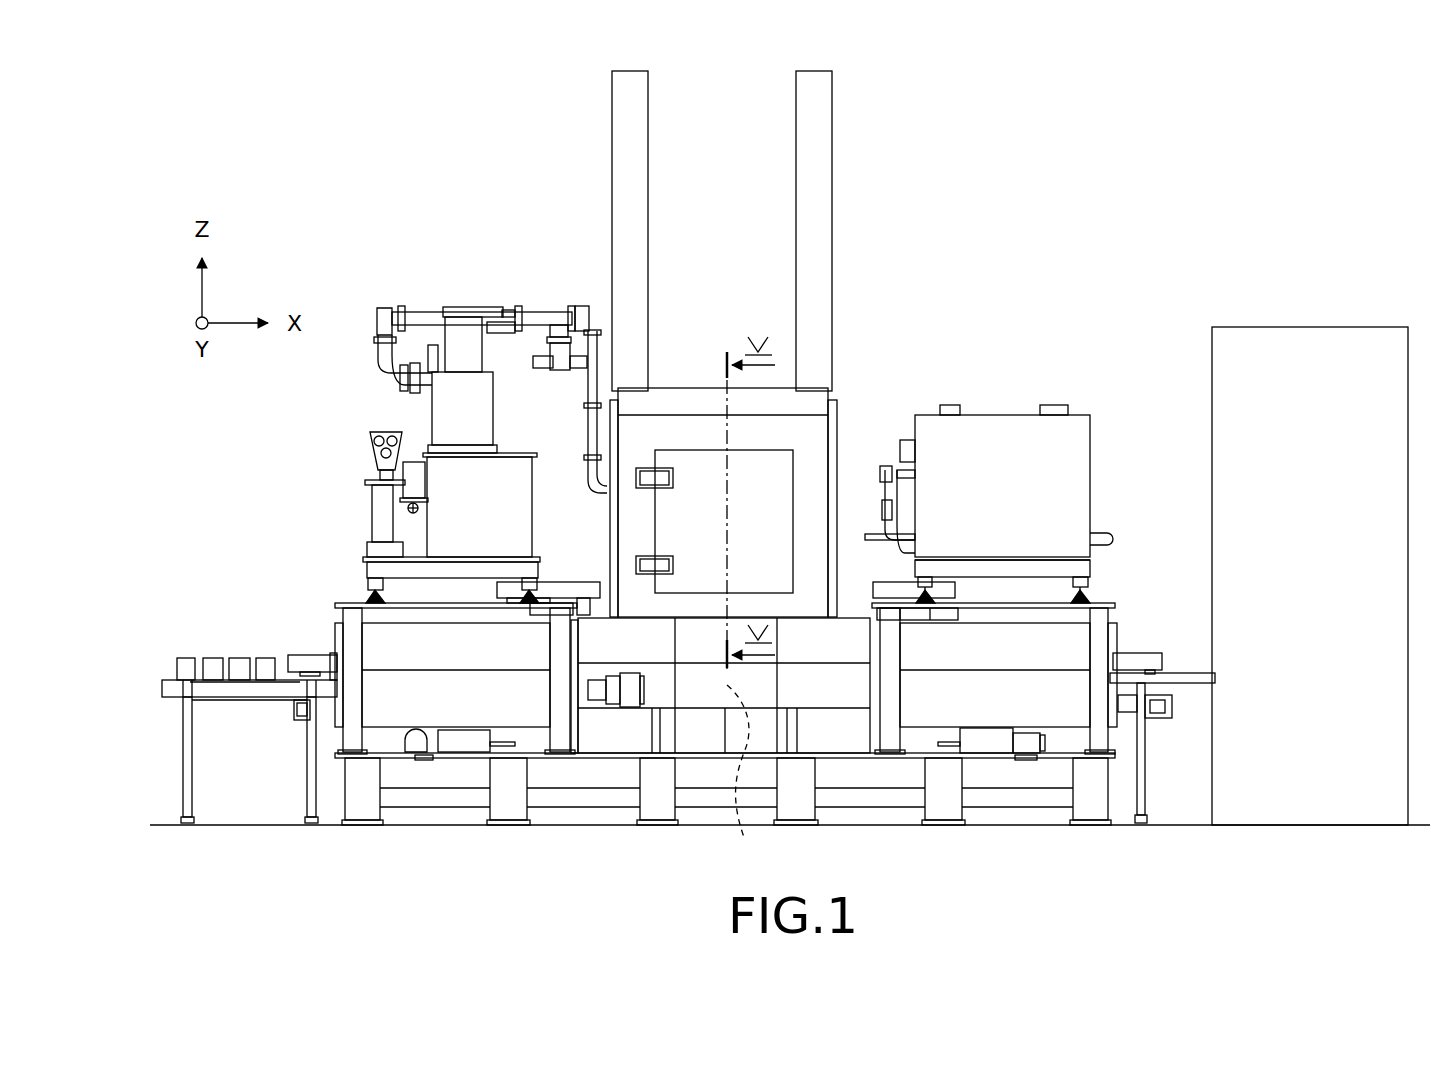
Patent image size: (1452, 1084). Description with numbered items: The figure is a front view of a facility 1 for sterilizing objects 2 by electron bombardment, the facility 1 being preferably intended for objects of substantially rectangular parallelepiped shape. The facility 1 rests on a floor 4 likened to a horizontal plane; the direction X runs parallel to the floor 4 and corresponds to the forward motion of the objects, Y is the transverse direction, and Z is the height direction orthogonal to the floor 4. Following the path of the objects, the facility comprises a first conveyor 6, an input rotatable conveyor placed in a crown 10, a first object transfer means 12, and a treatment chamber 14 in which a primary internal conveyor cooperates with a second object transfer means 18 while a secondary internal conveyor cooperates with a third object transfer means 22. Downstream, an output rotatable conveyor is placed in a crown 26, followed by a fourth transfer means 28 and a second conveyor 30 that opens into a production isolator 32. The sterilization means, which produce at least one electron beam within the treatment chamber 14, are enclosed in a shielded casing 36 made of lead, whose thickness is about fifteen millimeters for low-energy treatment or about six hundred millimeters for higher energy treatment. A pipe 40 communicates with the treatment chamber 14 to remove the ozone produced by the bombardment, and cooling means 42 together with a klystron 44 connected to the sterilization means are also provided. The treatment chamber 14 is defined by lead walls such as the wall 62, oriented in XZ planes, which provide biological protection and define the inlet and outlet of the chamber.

The facility 1 is at (452, 256).
The objects 2 is at (240, 658).
The floor 4 is at (231, 827).
The first conveyor 6 is at (215, 684).
The crown 10 is at (523, 715).
The first object transfer means 12 is at (308, 660).
The treatment chamber 14 is at (745, 783).
The second object transfer means 18 is at (560, 592).
The third object transfer means 22 is at (856, 590).
The crown 26 is at (1053, 710).
The fourth transfer means 28 is at (1143, 660).
The second conveyor 30 is at (1188, 688).
The production isolator 32 is at (1251, 345).
The shielded casing 36 is at (682, 463).
The pipe 40 is at (623, 142).
The cooling means 42 is at (1008, 423).
The klystron 44 is at (443, 514).
The wall 62 is at (620, 735).